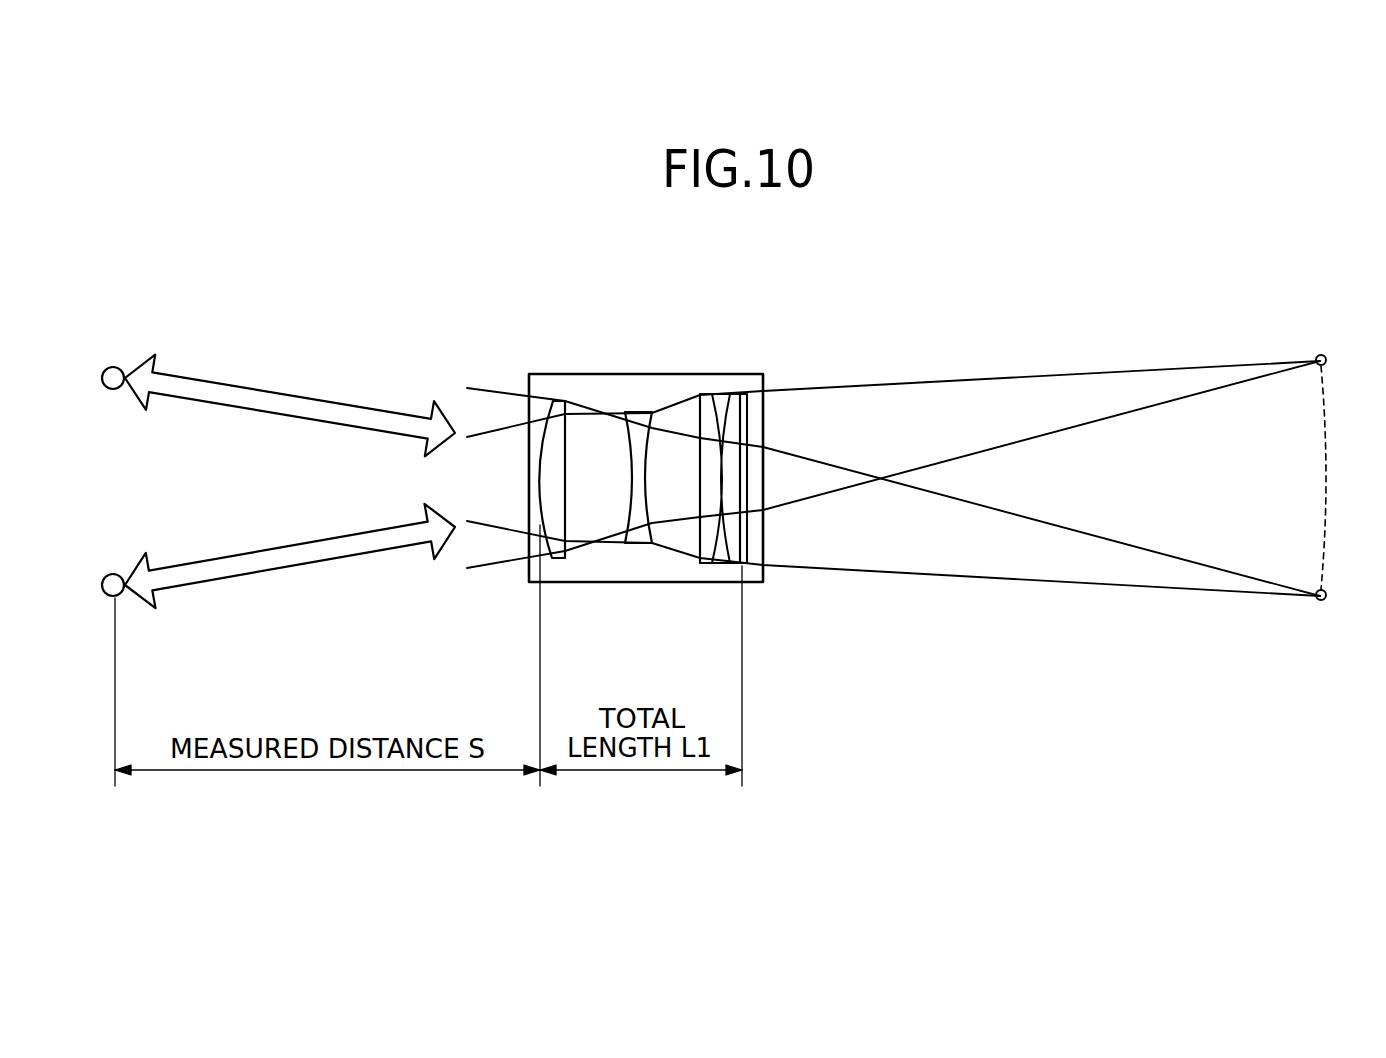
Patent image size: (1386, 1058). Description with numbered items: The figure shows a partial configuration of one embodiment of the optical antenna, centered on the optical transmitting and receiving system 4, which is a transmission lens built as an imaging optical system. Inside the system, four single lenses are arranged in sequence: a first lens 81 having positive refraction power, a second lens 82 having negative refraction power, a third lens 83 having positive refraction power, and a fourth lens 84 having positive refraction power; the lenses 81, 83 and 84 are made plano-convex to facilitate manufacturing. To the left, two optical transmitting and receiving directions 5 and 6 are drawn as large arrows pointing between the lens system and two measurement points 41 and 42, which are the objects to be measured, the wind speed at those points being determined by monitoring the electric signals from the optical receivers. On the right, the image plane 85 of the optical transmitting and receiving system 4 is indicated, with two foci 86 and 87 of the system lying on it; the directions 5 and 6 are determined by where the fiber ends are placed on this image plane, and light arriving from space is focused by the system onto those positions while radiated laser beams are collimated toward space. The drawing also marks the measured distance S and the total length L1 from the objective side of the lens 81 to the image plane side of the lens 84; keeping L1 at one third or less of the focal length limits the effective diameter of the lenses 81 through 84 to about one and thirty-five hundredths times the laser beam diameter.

The optical transmitting and receiving system 4 is at (766, 580).
The optical transmitting and receiving direction 5 is at (302, 543).
The optical transmitting and receiving direction 6 is at (291, 397).
The measurement point 41 is at (114, 574).
The measurement point 42 is at (114, 367).
The first lens 81 is at (558, 400).
The second lens 82 is at (639, 411).
The third lens 83 is at (701, 393).
The fourth lens 84 is at (746, 398).
The image plane 85 is at (1327, 424).
The focus 86 is at (1321, 354).
The focus 87 is at (1321, 601).